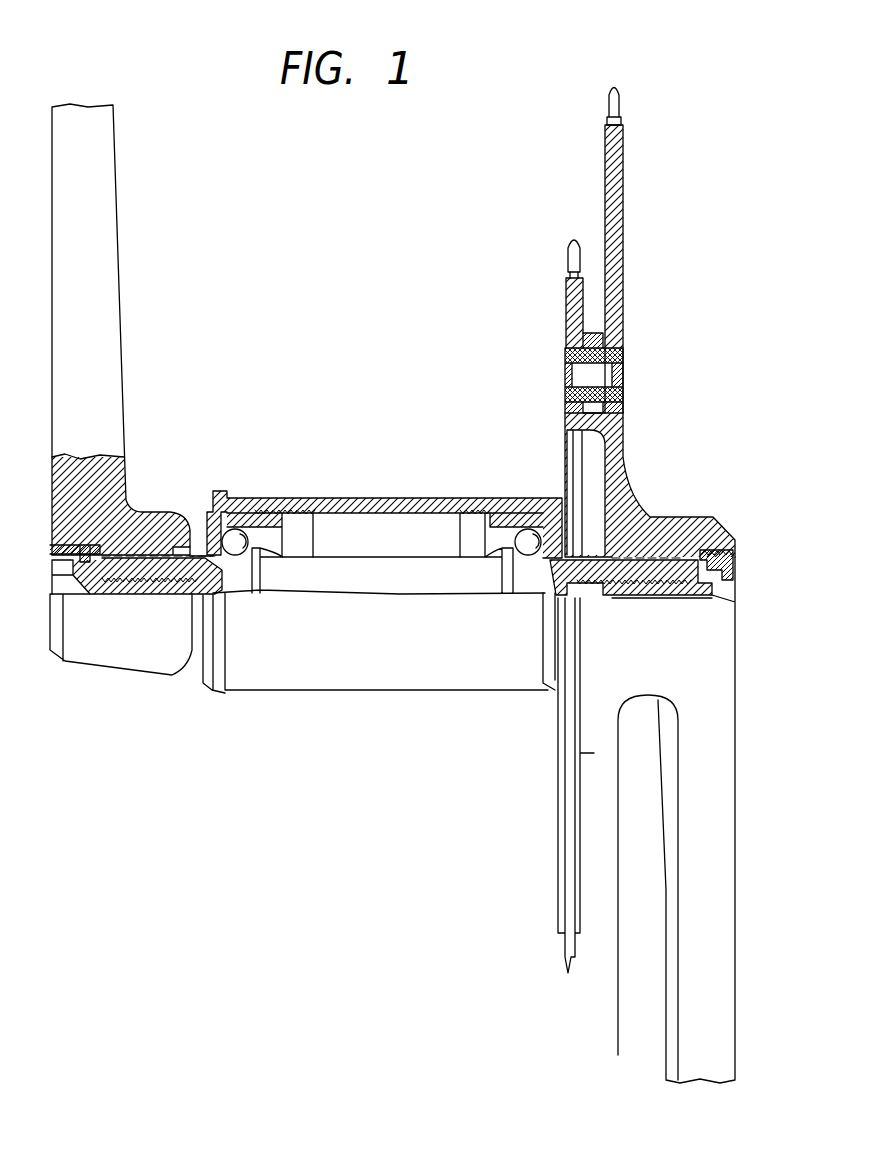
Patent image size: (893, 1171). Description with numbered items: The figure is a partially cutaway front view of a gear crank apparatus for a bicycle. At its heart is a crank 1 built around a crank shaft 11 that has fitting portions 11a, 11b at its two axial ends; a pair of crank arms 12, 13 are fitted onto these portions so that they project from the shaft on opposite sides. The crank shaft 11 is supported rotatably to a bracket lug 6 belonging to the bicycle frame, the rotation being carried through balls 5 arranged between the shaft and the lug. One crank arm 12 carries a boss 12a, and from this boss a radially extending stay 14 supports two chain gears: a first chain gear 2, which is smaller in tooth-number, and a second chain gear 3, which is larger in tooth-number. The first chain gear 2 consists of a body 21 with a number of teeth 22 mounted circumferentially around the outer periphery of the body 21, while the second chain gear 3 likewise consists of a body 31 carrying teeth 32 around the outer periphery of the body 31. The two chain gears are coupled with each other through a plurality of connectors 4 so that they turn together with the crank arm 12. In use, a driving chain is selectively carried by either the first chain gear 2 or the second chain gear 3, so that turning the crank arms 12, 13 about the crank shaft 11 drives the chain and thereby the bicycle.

The crank 1 is at (413, 557).
The crank shaft 11 is at (360, 567).
The fitting portion 11a is at (637, 557).
The fitting portion 11b is at (160, 557).
The crank arm 12 is at (733, 804).
The boss 12a is at (707, 520).
The crank arm 13 is at (105, 308).
The stay 14 is at (620, 433).
The first chain gear 2 is at (561, 327).
The body 21 is at (574, 297).
The teeth 22 is at (572, 255).
The second chain gear 3 is at (627, 161).
The body 31 is at (615, 207).
The teeth 32 is at (619, 101).
The connectors 4 is at (623, 357).
The balls 5 is at (240, 527).
The bracket lug 6 is at (322, 510).